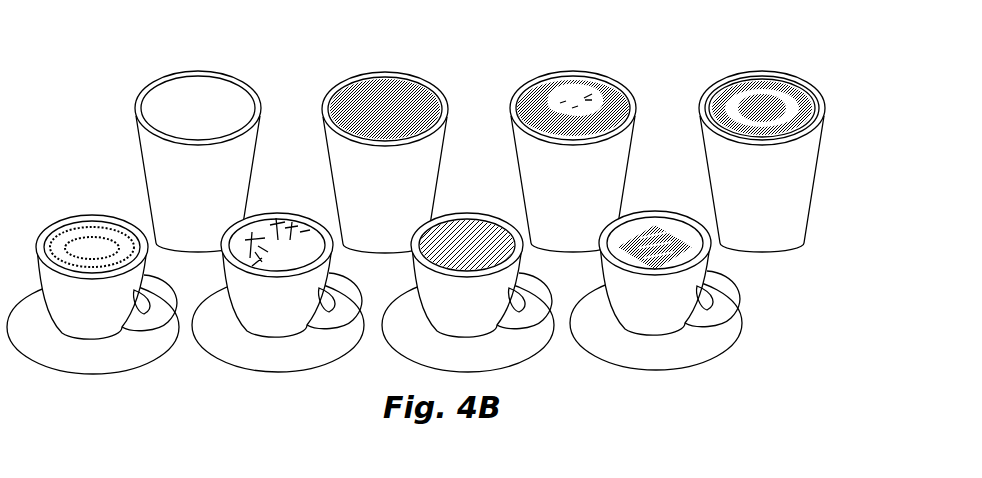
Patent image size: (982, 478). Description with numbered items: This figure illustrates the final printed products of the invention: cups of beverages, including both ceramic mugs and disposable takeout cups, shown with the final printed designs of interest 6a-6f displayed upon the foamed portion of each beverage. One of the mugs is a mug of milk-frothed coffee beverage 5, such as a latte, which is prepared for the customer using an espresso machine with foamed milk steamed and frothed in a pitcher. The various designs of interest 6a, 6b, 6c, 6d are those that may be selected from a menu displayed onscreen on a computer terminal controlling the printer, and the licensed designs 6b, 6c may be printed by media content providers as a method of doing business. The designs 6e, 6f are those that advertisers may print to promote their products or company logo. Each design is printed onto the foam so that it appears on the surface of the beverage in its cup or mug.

The mug of milk-frothed coffee beverage 5 is at (678, 302).
The design of interest 6a is at (198, 88).
The design of interest 6b is at (385, 74).
The design of interest 6c is at (574, 90).
The design of interest 6d is at (762, 86).
The design 6e is at (716, 321).
The design 6f is at (277, 272).